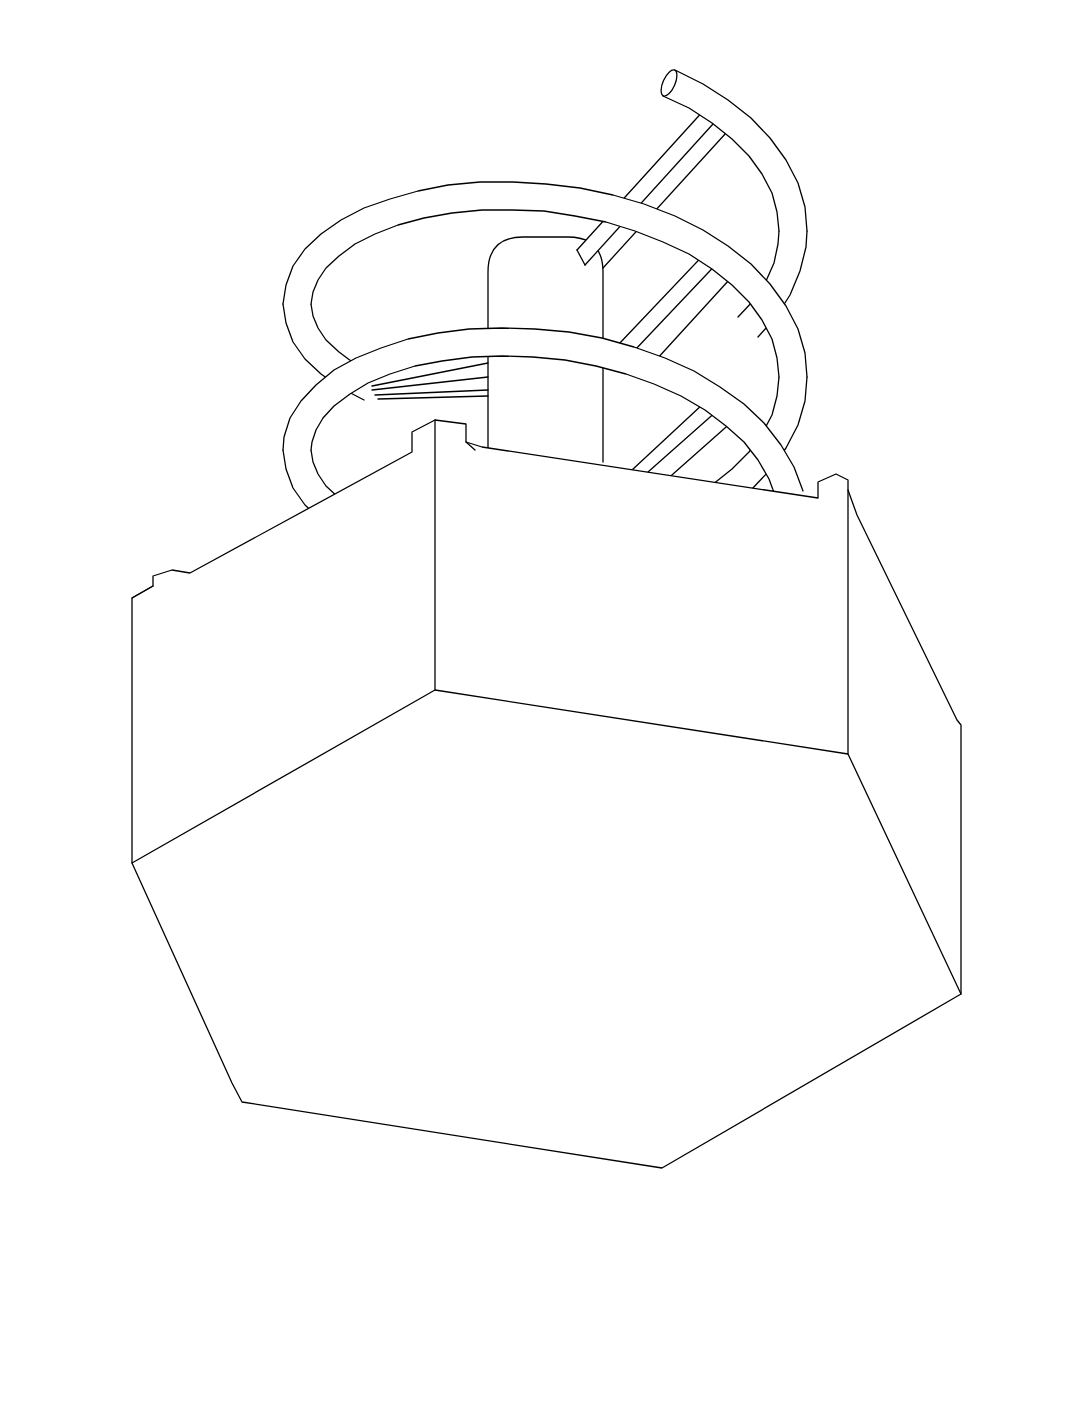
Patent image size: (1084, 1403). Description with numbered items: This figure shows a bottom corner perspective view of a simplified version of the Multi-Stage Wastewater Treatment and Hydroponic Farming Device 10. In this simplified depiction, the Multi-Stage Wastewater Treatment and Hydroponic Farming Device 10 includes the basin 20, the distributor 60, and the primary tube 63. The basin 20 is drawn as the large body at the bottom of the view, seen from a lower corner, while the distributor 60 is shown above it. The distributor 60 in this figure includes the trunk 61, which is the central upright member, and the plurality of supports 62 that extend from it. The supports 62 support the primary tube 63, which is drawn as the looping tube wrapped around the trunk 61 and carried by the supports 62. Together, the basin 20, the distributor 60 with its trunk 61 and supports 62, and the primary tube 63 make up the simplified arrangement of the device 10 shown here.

The Multi-Stage Wastewater Treatment and Hydroponic Farming Device 10 is at (186, 150).
The basin 20 is at (229, 1077).
The distributor 60 is at (266, 126).
The trunk 61 is at (538, 292).
The supports 62 is at (650, 182).
The primary tube 63 is at (808, 218).